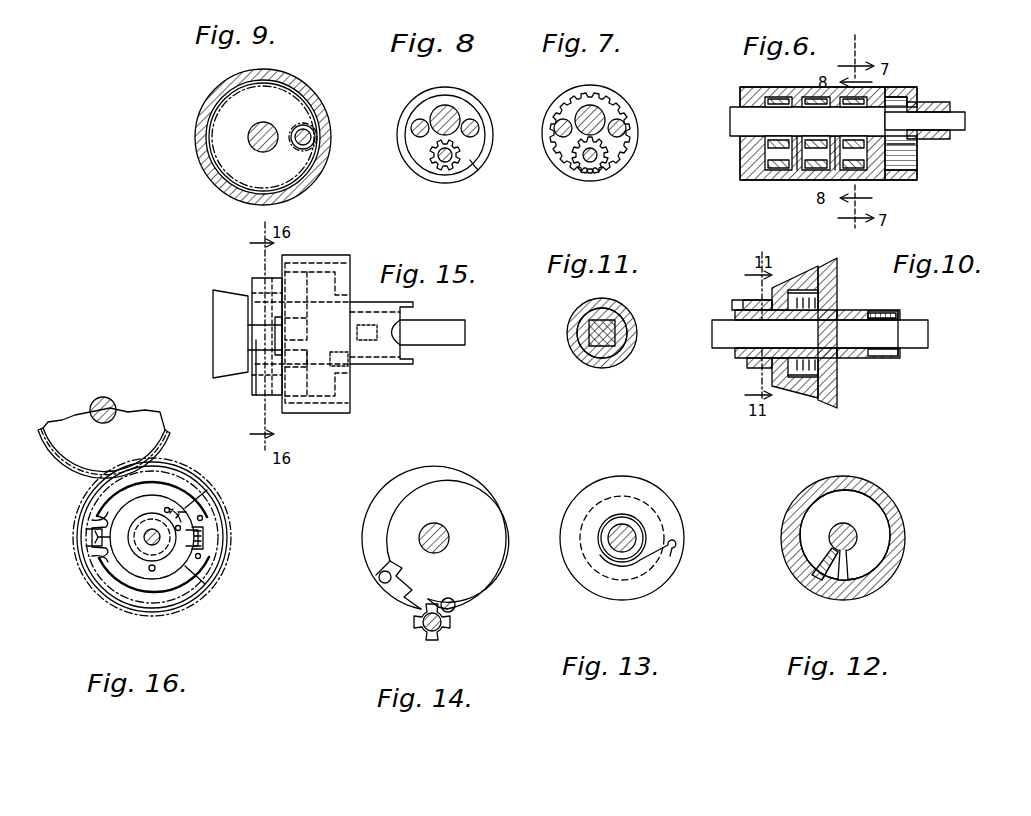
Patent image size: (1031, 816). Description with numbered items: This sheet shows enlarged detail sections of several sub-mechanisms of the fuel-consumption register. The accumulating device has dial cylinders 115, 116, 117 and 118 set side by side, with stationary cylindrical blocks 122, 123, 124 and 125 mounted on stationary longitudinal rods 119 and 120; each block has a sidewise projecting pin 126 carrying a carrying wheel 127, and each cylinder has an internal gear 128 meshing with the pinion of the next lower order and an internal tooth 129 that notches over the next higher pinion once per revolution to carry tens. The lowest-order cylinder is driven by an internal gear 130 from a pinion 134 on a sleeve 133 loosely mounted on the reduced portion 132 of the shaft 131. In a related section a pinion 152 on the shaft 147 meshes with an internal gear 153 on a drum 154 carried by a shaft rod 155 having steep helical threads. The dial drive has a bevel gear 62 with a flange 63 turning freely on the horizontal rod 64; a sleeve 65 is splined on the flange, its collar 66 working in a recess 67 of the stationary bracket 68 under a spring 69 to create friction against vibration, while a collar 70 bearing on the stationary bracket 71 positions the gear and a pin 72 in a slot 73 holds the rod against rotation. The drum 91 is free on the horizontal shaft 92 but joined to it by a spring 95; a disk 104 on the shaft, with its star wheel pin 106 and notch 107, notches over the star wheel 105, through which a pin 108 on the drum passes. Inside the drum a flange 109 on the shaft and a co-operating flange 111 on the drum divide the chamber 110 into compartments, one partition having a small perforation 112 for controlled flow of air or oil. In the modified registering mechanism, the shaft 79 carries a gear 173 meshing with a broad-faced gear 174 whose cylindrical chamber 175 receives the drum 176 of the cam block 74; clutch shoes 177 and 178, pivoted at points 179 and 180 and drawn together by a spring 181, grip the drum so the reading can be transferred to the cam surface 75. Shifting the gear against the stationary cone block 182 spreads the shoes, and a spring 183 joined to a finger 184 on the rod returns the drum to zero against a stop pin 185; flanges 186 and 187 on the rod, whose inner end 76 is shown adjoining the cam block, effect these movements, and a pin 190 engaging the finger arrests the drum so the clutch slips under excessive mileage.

In FIG. 10, the bevel gear 62 is at (840, 400).
In FIG. 11, the flange 63 is at (637, 334).
In FIG. 10, the flange 63 is at (740, 356).
In FIG. 15, the horizontal rod 64 is at (455, 335).
In FIG. 11, the horizontal rod 64 is at (585, 356).
In FIG. 10, the horizontal rod 64 is at (935, 333).
In FIG. 11, the sleeve 65 is at (608, 360).
In FIG. 10, the sleeve 65 is at (755, 366).
In FIG. 10, the collar 66 is at (782, 388).
In FIG. 10, the recess 67 is at (800, 400).
In FIG. 10, the stationary bracket 68 is at (800, 290).
In FIG. 10, the spring 69 is at (830, 300).
In FIG. 10, the collar 70 is at (860, 360).
In FIG. 10, the stationary bracket 71 is at (885, 360).
In FIG. 10, the pin 72 is at (882, 314).
In FIG. 10, the slot 73 is at (900, 318).
In FIG. 15, the cam block 74 is at (372, 368).
In FIG. 10, the cam surface 75 is at (742, 302).
In FIG. 15, the socket end 76 is at (412, 317).
In FIG. 16, the shaft 79 is at (99, 397).
In FIG. 13, the drum 91 is at (605, 600).
In FIG. 12, the drum 91 is at (815, 582).
In FIG. 14, the horizontal shaft 92 is at (450, 532).
In FIG. 13, the horizontal shaft 92 is at (640, 525).
In FIG. 12, the horizontal shaft 92 is at (858, 537).
In FIG. 13, the spring 95 is at (600, 560).
In FIG. 14, the disk 104 is at (500, 553).
In FIG. 14, the star wheel 105 is at (430, 645).
In FIG. 14, the star wheel pin 106 is at (381, 585).
In FIG. 14, the notch 107 is at (378, 572).
In FIG. 14, the pin 108 is at (460, 608).
In FIG. 12, the flange 109 is at (818, 548).
In FIG. 12, the chamber 110 is at (868, 520).
In FIG. 12, the co-operating flange 111 is at (850, 568).
In FIG. 12, the perforation 112 is at (812, 562).
In FIG. 6, the dial cylinder 115 is at (760, 178).
In FIG. 6, the dial cylinder 116 is at (810, 178).
In FIG. 8, the dial cylinder 117 is at (492, 160).
In FIG. 6, the dial cylinder 117 is at (835, 180).
In FIG. 7, the dial cylinder 118 is at (640, 145).
In FIG. 6, the dial cylinder 118 is at (885, 180).
In FIG. 8, the longitudinal rod 119 is at (476, 123).
In FIG. 8, the longitudinal rod 120 is at (414, 123).
In FIG. 7, the longitudinal rod 120 is at (624, 125).
In FIG. 6, the stationary cylindrical block 122 is at (742, 165).
In FIG. 6, the stationary cylindrical block 123 is at (798, 88).
In FIG. 8, the stationary cylindrical block 124 is at (470, 145).
In FIG. 6, the stationary cylindrical block 124 is at (808, 87).
In FIG. 7, the stationary cylindrical block 125 is at (608, 112).
In FIG. 6, the stationary cylindrical block 125 is at (886, 92).
In FIG. 8, the pin or lug 126 is at (441, 162).
In FIG. 7, the pin or lug 126 is at (583, 170).
In FIG. 6, the pin or lug 126 is at (772, 175).
In FIG. 8, the carrying wheel 127 is at (447, 162).
In FIG. 7, the carrying wheel 127 is at (592, 172).
In FIG. 6, the carrying wheel 127 is at (792, 176).
In FIG. 7, the internal gear 128 is at (632, 160).
In FIG. 8, the internal tooth 129 is at (472, 170).
In FIG. 6, the internal gear 130 is at (912, 167).
In FIG. 8, the shaft 131 is at (452, 108).
In FIG. 7, the shaft 131 is at (588, 106).
In FIG. 6, the shaft 131 is at (740, 122).
In FIG. 6, the reduced shaft 132 is at (950, 120).
In FIG. 6, the sleeve 133 is at (930, 104).
In FIG. 6, the pinion 134 is at (915, 144).
In FIG. 9, the shaft 147 is at (312, 125).
In FIG. 9, the pinion 152 is at (312, 152).
In FIG. 9, the internal gear 153 is at (238, 190).
In FIG. 9, the drum 154 is at (203, 152).
In FIG. 9, the shaft rod 155 is at (250, 137).
In FIG. 16, the gear 173 is at (85, 447).
In FIG. 15, the gear 174 is at (320, 415).
In FIG. 16, the gear 174 is at (112, 600).
In FIG. 16, the cylindrical chamber 175 is at (209, 515).
In FIG. 15, the drum 176 is at (318, 372).
In FIG. 16, the drum 176 is at (166, 566).
In FIG. 15, the clutch shoe 177 is at (258, 280).
In FIG. 16, the clutch shoe 177 is at (118, 503).
In FIG. 15, the clutch shoe 178 is at (260, 395).
In FIG. 16, the clutch shoe 178 is at (140, 585).
In FIG. 16, the pivot point 179 is at (86, 532).
In FIG. 16, the pivot point 180 is at (88, 546).
In FIG. 16, the spring 181 is at (204, 537).
In FIG. 15, the stationary cone block 182 is at (220, 348).
In FIG. 16, the spring 183 is at (180, 512).
In FIG. 16, the finger 184 is at (178, 548).
In FIG. 16, the stop pin 185 is at (140, 560).
In FIG. 15, the flange 186 is at (355, 322).
In FIG. 15, the flange 187 is at (275, 340).
In FIG. 16, the pin 190 is at (153, 572).